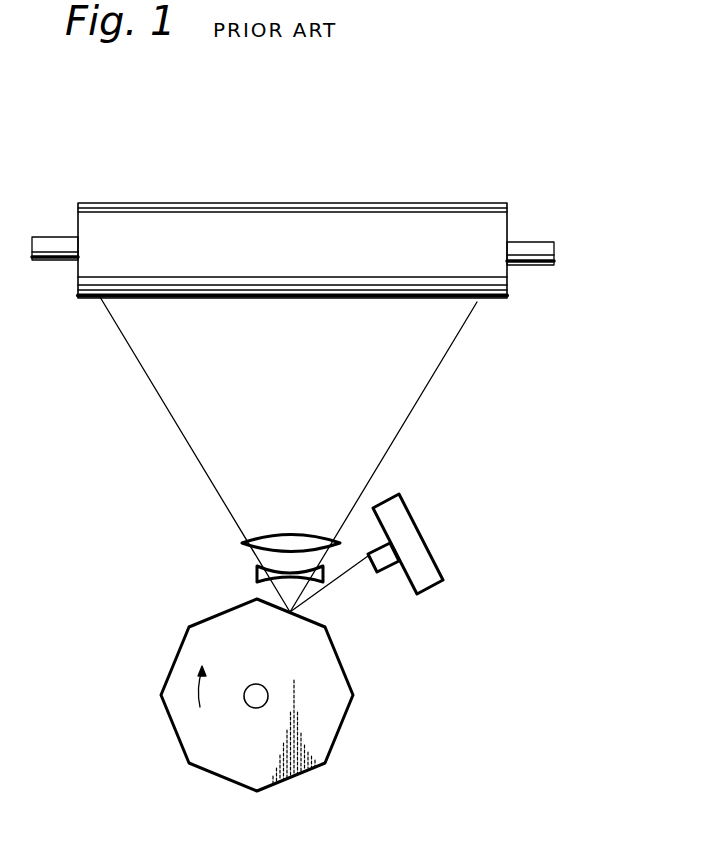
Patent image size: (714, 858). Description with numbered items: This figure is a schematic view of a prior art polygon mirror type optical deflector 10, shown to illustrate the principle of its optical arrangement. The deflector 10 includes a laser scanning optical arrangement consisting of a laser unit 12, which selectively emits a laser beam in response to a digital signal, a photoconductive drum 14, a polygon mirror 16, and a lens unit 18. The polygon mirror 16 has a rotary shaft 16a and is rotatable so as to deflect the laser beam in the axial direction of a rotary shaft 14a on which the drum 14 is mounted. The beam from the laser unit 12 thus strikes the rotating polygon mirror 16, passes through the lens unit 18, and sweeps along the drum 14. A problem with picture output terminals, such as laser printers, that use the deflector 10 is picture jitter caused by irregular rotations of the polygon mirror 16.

The prior art polygon mirror type optical deflector 10 is at (304, 224).
The laser unit 12 is at (410, 533).
The photoconductive drum 14 is at (85, 298).
The rotary shaft 14a is at (42, 262).
The polygon mirror 16 is at (327, 662).
The rotary shaft 16a is at (268, 697).
The lens unit 18 is at (237, 542).